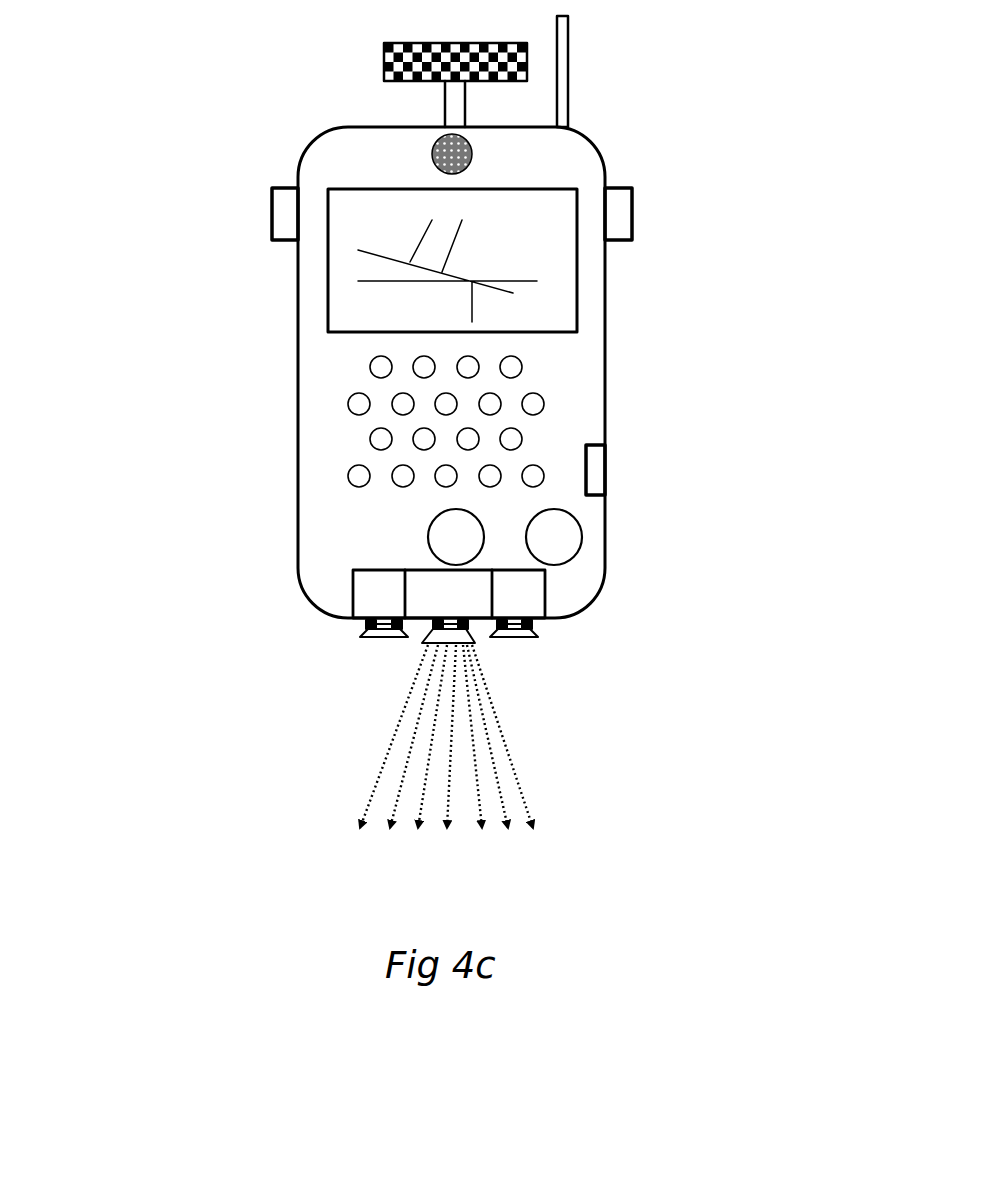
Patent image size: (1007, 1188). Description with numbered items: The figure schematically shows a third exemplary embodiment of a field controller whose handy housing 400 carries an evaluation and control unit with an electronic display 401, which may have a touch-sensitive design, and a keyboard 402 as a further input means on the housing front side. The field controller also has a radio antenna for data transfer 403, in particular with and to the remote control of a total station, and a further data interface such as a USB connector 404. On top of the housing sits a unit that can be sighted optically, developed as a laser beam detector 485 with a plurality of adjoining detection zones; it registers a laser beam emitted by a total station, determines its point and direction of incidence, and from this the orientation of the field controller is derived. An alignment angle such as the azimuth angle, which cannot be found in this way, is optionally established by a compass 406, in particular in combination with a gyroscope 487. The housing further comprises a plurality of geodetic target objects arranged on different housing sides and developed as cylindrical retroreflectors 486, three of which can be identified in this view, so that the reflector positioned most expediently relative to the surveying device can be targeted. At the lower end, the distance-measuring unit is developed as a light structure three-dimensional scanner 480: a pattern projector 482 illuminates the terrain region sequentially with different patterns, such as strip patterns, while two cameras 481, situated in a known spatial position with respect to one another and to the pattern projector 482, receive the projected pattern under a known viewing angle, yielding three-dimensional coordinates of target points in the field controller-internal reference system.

The housing 400 is at (608, 358).
The electronic display 401 is at (560, 260).
The keyboard 402 is at (352, 423).
The radio antenna for data transfer 403 is at (568, 68).
The USB connector 404 is at (600, 462).
The compass 406 is at (570, 543).
The light structure 3D scanner 480 is at (465, 598).
The cameras 481 is at (375, 632).
The pattern projector 482 is at (443, 635).
The laser beam detector 485 is at (384, 76).
The cylindrical retroreflectors 486 is at (432, 154).
The gyroscope 487 is at (440, 537).